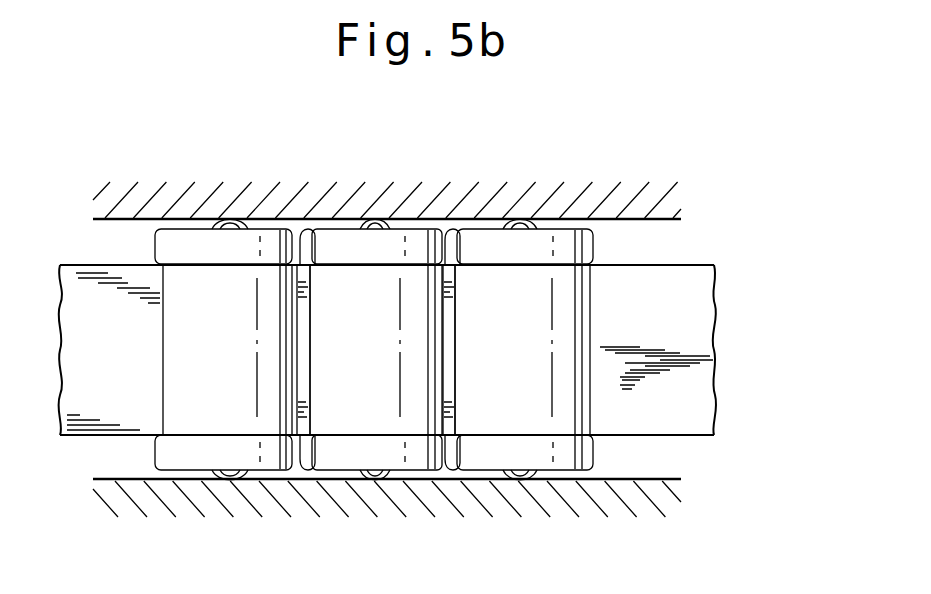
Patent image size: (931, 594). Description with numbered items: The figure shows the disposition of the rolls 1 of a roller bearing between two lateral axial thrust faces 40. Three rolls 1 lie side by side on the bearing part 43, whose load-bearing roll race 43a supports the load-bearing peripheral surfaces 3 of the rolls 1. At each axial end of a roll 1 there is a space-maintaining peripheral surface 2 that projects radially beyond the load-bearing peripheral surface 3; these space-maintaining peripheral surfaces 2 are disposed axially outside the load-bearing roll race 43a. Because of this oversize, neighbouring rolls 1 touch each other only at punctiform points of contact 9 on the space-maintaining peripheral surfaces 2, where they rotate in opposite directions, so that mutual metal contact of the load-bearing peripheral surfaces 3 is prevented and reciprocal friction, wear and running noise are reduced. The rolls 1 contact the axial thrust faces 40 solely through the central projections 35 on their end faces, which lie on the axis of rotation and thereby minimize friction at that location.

The roll 1 is at (602, 320).
The space-maintaining peripheral surface 2 is at (154, 239).
The load-bearing peripheral surface 3 is at (159, 341).
The point of contact 9 is at (304, 250).
The central projection 35 is at (373, 222).
The axial thrust face 40 is at (666, 224).
The bearing part 43 is at (714, 424).
The load-bearing roll race 43a is at (670, 334).